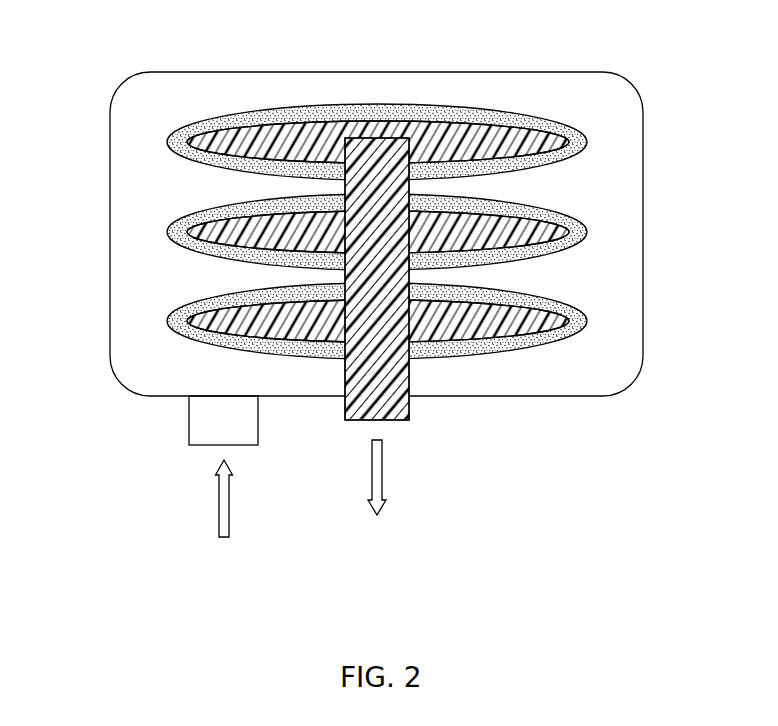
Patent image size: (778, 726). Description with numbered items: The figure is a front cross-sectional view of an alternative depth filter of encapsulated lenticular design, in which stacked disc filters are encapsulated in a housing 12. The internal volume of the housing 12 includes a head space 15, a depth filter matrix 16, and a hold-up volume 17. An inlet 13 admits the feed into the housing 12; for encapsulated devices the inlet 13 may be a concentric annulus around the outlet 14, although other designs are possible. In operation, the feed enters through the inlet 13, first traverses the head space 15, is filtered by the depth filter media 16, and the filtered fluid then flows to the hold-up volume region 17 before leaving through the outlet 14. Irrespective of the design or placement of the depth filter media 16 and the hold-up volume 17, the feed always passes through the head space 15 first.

The housing 12 is at (643, 302).
The inlet 13 is at (197, 457).
The outlet 14 is at (357, 429).
The head space 15 is at (617, 139).
The depth filter matrix 16 is at (492, 113).
The hold-up volume 17 is at (270, 135).